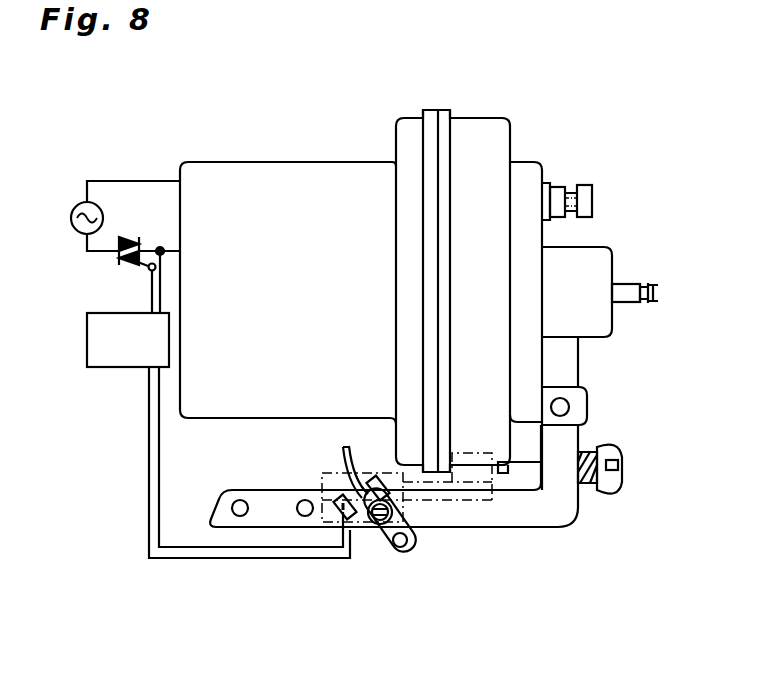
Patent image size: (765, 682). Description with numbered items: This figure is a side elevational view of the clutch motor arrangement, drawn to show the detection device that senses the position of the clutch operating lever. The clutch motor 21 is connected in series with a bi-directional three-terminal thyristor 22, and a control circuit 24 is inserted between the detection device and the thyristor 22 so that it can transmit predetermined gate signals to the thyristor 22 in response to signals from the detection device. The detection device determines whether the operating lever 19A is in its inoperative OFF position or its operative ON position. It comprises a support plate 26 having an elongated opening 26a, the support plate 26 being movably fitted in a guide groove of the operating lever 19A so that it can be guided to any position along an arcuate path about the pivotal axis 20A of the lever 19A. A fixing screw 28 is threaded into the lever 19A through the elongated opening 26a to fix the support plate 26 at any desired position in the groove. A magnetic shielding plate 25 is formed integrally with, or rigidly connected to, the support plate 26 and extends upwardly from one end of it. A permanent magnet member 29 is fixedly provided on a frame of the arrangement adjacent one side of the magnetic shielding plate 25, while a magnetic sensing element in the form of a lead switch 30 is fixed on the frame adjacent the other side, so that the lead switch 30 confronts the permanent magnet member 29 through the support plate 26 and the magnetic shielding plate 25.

The clutch operating lever 19A is at (560, 510).
The pivotal axis 20A is at (565, 408).
The clutch motor 21 is at (290, 195).
The bi-directional three-terminal thyristor 22 is at (133, 235).
The control circuit 24 is at (115, 352).
The magnetic shielding plate 25 is at (343, 460).
The support plate 26 is at (405, 548).
The elongated opening 26a is at (392, 535).
The fixing screw 28 is at (378, 540).
The permanent magnet member 29 is at (358, 517).
The lead switch 30 is at (333, 512).